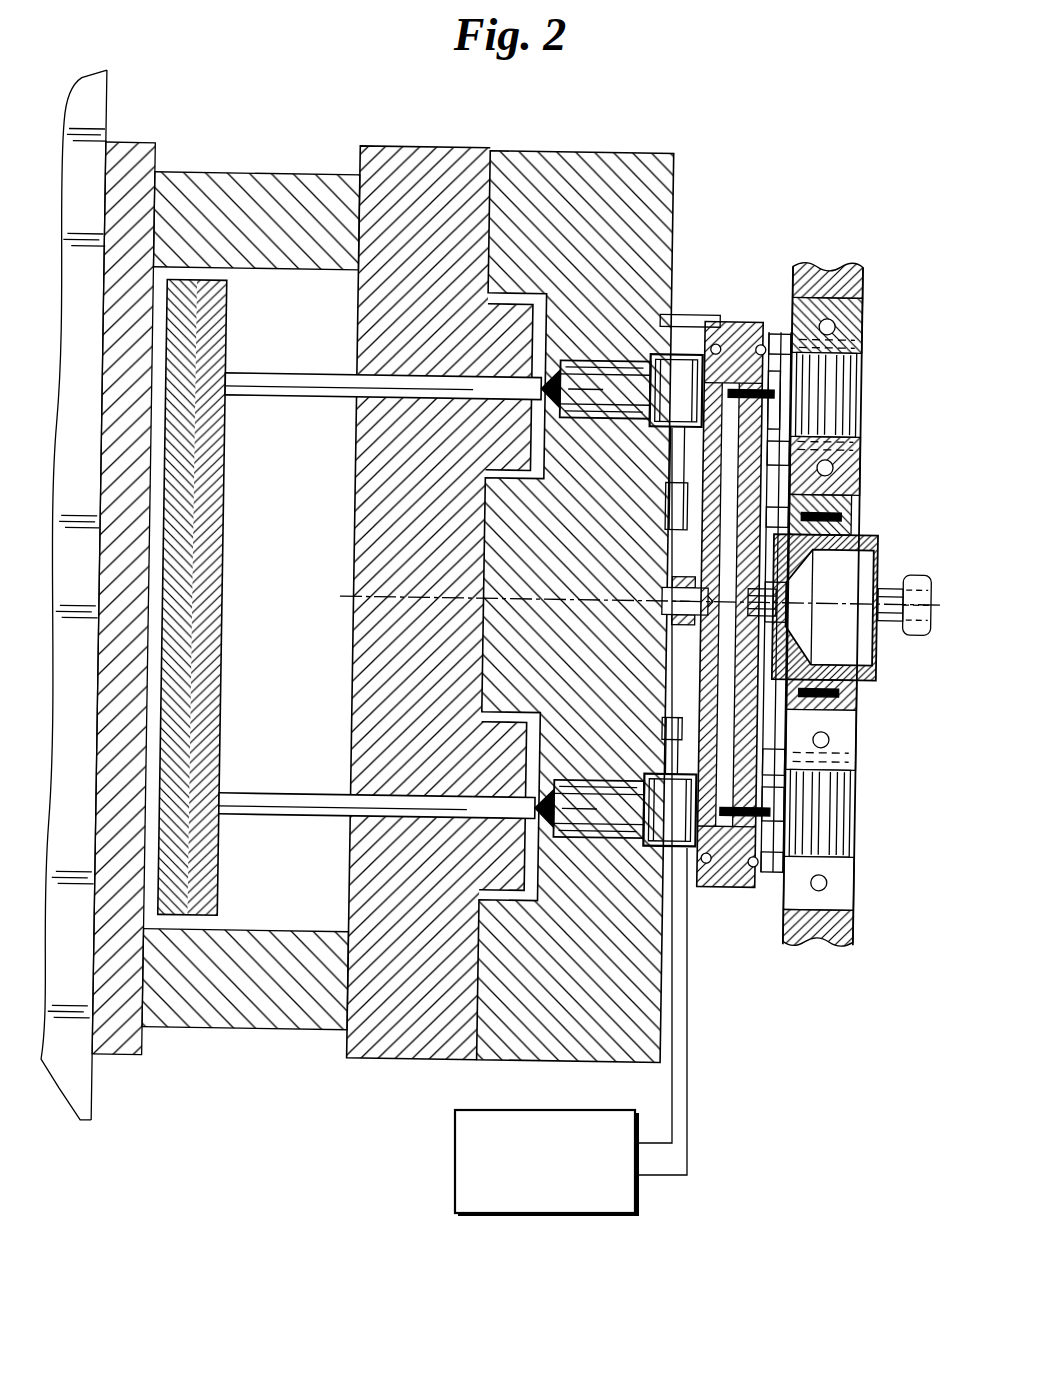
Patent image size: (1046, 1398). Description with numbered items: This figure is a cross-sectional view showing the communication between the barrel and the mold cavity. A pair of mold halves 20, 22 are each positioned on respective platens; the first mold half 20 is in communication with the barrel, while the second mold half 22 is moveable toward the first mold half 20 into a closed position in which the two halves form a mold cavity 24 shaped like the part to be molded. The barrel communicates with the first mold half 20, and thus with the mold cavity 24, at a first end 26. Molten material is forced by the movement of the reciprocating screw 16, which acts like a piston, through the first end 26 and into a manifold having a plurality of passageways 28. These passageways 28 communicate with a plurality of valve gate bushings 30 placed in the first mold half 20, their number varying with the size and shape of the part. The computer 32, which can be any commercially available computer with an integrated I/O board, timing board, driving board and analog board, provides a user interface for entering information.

The reciprocating screw 16 is at (909, 633).
The first mold half 20 is at (661, 1033).
The second mold half 22 is at (377, 1052).
The mold cavity 24 is at (526, 356).
The first end 26 is at (880, 575).
The passageways 28 is at (818, 460).
The valve gate bushings 30 is at (686, 340).
The computer 32 is at (455, 1163).